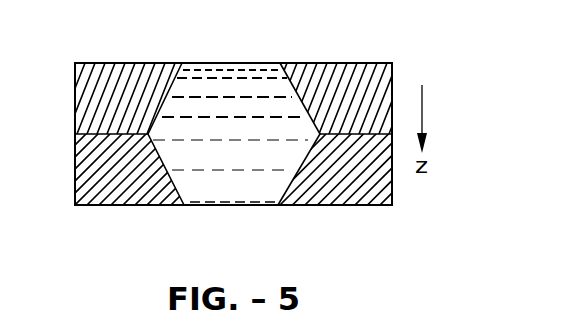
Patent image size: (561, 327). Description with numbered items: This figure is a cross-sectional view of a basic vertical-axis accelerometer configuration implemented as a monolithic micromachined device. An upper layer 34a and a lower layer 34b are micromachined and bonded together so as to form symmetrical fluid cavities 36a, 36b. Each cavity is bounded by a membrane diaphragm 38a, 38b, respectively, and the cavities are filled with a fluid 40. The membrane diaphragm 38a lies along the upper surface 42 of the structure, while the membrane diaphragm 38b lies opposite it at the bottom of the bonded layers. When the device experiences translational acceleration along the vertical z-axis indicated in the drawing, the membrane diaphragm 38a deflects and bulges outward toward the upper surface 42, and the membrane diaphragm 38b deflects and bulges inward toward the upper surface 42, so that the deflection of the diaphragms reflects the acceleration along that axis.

The upper surface 42 is at (102, 63).
The upper layer 34a is at (392, 92).
The lower layer 34b is at (392, 192).
The fluid cavity 36a is at (248, 68).
The fluid cavity 36b is at (262, 188).
The membrane diaphragm 38a is at (203, 63).
The membrane diaphragm 38b is at (217, 206).
The fluid 40 is at (218, 173).